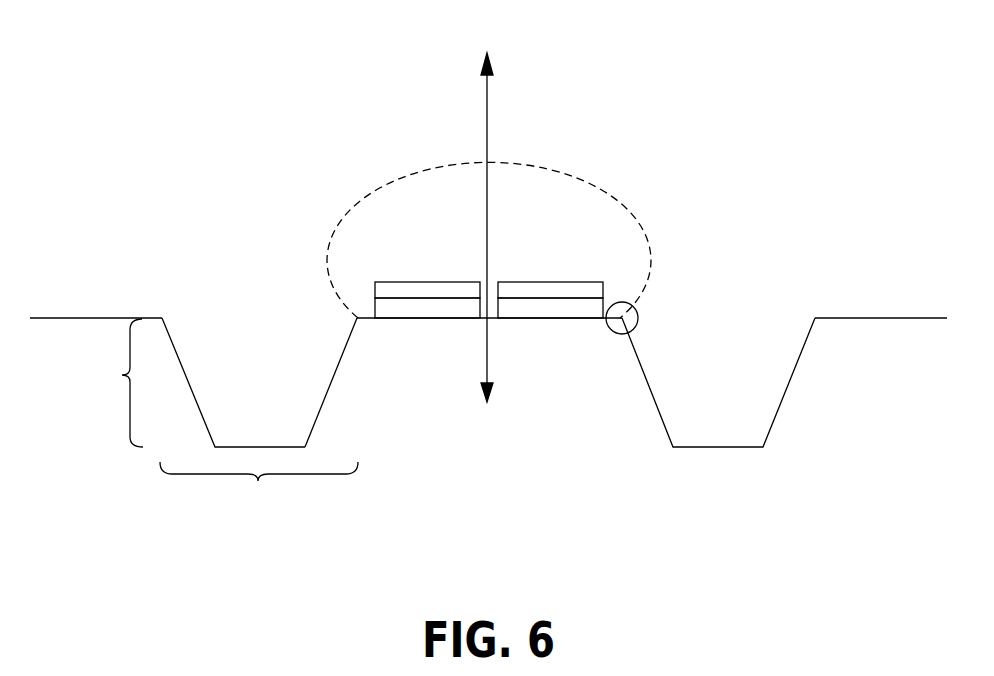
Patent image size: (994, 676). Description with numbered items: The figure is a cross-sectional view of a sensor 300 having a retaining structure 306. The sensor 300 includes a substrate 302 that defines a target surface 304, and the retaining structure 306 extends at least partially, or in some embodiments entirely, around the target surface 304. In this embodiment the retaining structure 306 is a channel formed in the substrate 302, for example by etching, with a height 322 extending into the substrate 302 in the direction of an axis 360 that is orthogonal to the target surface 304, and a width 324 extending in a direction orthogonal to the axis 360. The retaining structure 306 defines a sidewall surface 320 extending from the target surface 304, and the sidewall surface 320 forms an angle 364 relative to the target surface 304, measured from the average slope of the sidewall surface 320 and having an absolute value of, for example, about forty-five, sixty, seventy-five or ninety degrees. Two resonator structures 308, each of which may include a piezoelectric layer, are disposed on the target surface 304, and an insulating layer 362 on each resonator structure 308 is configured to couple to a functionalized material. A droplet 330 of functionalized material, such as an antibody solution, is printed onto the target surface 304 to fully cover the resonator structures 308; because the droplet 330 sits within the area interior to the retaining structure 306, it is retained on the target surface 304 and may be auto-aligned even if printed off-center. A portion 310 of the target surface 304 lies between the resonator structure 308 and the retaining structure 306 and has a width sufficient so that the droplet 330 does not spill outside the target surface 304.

The sensor 300 is at (230, 92).
The substrate 302 is at (506, 478).
The target surface 304 is at (368, 315).
The retaining structure 306 is at (267, 327).
The resonator structure 308 is at (448, 312).
The portion of the target surface 310 is at (617, 333).
The sidewall surface 320 is at (337, 373).
The height 322 is at (114, 383).
The width 324 is at (259, 487).
The droplet 330 is at (372, 195).
The axis 360 is at (488, 137).
The insulating layer 362 is at (410, 290).
The angle 364 is at (645, 325).